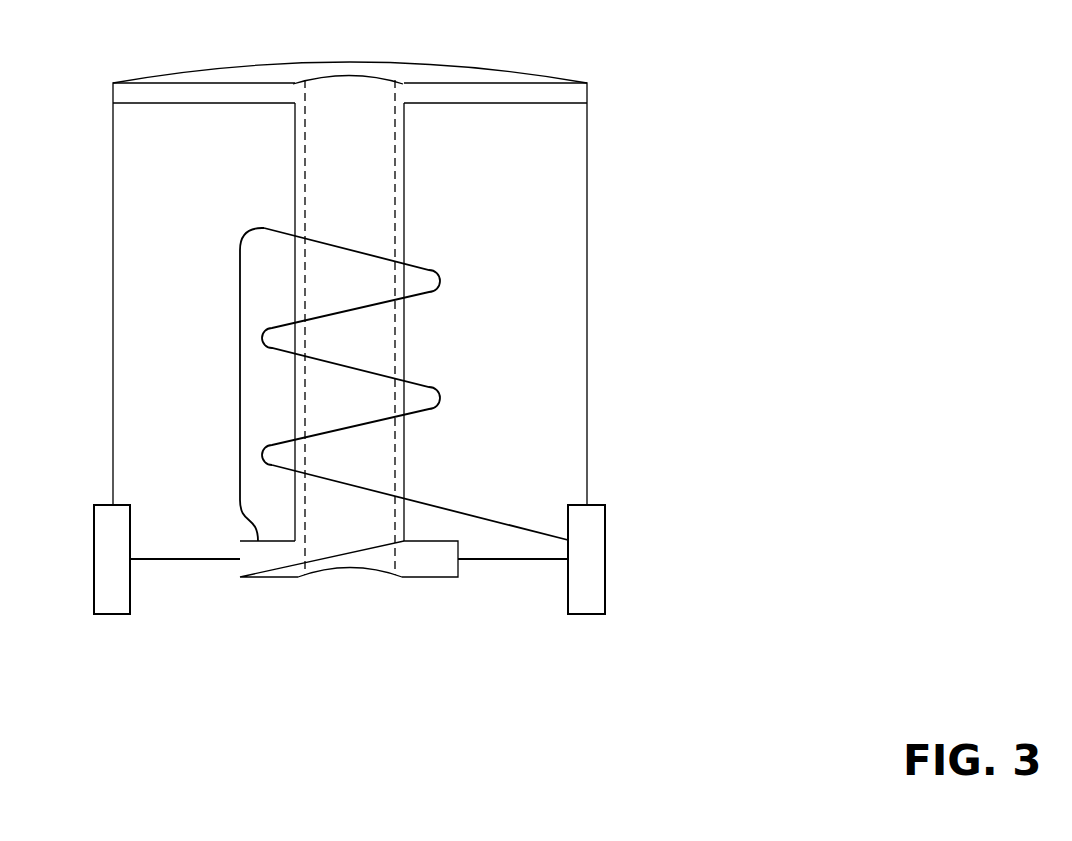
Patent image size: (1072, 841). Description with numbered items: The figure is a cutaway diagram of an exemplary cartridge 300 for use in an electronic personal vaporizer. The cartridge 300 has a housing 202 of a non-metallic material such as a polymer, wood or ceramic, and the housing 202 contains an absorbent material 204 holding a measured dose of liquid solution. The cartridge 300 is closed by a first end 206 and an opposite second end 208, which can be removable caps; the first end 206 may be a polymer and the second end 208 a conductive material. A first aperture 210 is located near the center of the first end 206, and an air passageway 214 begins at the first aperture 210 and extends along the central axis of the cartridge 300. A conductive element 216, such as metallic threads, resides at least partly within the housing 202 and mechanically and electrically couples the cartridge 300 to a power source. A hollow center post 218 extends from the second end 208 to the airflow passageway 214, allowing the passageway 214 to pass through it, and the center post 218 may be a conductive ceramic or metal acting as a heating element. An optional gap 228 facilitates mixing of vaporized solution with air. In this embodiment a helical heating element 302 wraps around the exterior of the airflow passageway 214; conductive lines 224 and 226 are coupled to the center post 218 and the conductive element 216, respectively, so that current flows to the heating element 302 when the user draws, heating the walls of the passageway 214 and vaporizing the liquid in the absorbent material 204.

The cartridge 300 is at (678, 138).
The housing 202 is at (587, 247).
The absorbent material 204 is at (496, 166).
The first end 206 is at (187, 70).
The second end 208 is at (222, 560).
The first aperture 210 is at (358, 75).
The air passageway 214 is at (350, 327).
The conductive element 216 is at (130, 520).
The center post 218 is at (293, 580).
The conductive line 224 is at (227, 278).
The conductive line 226 is at (457, 510).
The gap 228 is at (587, 92).
The heating element 302 is at (420, 267).